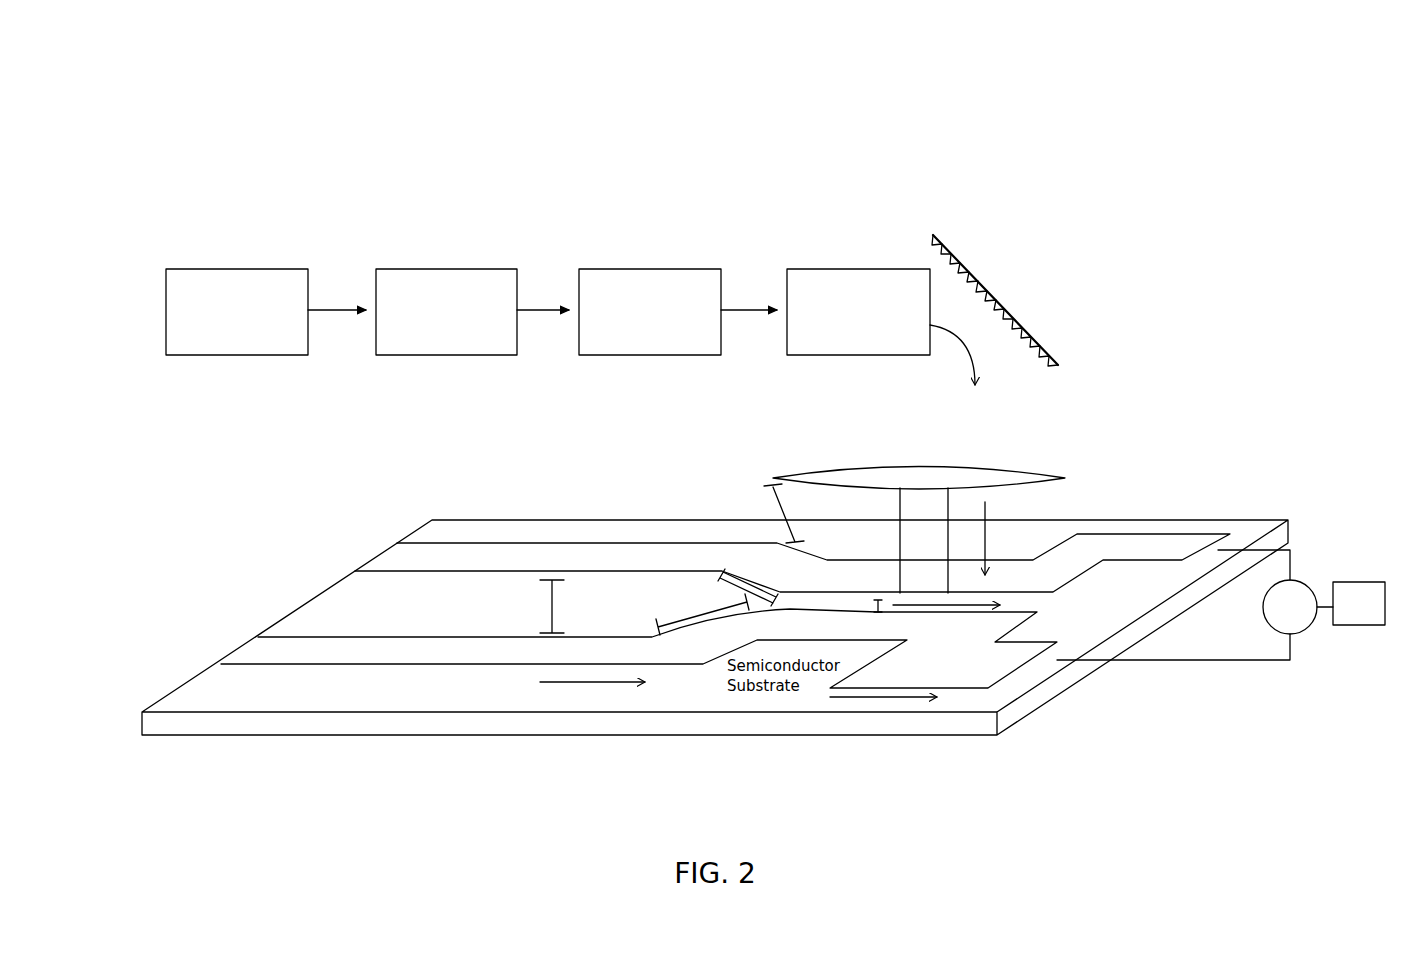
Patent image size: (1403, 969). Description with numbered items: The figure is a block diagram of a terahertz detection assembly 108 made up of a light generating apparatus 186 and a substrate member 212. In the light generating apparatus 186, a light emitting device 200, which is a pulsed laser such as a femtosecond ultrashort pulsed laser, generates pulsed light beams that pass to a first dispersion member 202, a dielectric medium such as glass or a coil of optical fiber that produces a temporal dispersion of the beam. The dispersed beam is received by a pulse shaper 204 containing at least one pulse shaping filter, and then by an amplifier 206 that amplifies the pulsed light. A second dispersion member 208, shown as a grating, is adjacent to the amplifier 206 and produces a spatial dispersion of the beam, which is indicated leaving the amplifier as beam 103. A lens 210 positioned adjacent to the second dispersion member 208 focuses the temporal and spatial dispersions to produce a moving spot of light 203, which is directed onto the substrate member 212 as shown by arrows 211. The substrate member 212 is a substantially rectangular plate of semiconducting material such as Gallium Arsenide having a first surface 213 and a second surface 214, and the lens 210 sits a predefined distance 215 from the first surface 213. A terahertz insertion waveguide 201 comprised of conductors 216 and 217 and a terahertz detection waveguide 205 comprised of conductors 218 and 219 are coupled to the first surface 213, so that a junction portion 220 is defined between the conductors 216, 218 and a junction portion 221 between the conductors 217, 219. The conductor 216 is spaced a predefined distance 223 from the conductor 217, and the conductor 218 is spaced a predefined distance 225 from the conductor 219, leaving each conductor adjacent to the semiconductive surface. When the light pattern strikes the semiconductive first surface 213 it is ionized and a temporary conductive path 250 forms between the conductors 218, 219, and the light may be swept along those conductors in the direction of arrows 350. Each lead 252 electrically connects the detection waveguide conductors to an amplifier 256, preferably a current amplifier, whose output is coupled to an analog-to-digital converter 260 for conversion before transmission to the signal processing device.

The terahertz detection assembly 108 is at (1183, 82).
The light generating apparatus 186 is at (335, 150).
The light emitting device 200 is at (212, 269).
The first dispersion member 202 is at (440, 269).
The pulse shaper 204 is at (635, 269).
The amplifier 206 is at (820, 269).
The second dispersion member 208 is at (945, 242).
The optical pulse beam 103 is at (975, 367).
The moving spot of light 203 is at (895, 510).
The lens 210 is at (895, 467).
The arrows 211 is at (992, 543).
The substrate member 212 is at (1220, 462).
The first surface 213 is at (1243, 527).
The conductor 219 is at (1013, 573).
The temporary conductive path 250 is at (980, 600).
The lead 252 is at (1190, 545).
The terahertz detection waveguide 205 is at (1040, 622).
The amplifier 256 is at (1312, 625).
The analog-to-digital converter 260 is at (1359, 603).
The second surface 214 is at (972, 735).
The terahertz insertion waveguide 201 is at (345, 552).
The conductor 217 is at (488, 560).
The conductor 216 is at (513, 666).
The predefined distance 225 is at (777, 612).
The conductor 218 is at (853, 640).
The arrows 350 is at (563, 683).
The predefined distance 223 is at (547, 602).
The junction portion 220 is at (710, 607).
The predefined distance 215 is at (780, 508).
The junction portion 221 is at (750, 583).